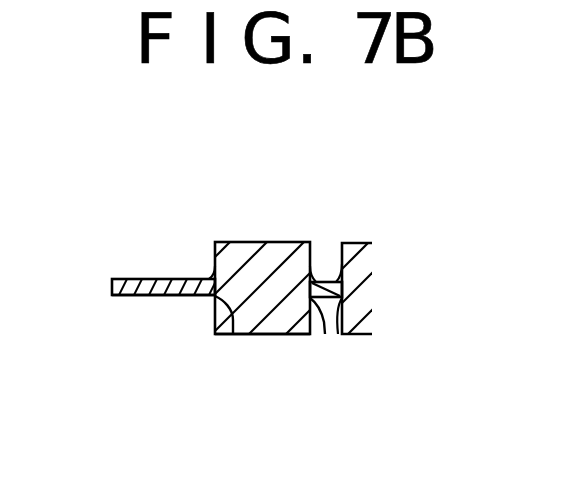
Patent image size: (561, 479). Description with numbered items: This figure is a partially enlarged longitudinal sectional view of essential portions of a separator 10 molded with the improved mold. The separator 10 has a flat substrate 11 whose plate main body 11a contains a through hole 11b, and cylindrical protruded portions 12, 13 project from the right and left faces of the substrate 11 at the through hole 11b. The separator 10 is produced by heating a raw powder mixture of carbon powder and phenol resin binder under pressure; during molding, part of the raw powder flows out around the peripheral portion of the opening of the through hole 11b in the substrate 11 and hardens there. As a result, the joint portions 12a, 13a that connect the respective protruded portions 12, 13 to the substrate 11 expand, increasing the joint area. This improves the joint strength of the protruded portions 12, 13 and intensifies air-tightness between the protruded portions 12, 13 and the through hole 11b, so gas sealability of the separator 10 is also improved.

The separator 10 is at (380, 342).
The substrate 11 is at (134, 279).
The plate main body 11a is at (158, 297).
The through hole 11b is at (229, 335).
The protruded portion 12 is at (240, 243).
The joint portion 12a is at (316, 282).
The protruded portion 13 is at (255, 336).
The joint portion 13a is at (324, 336).